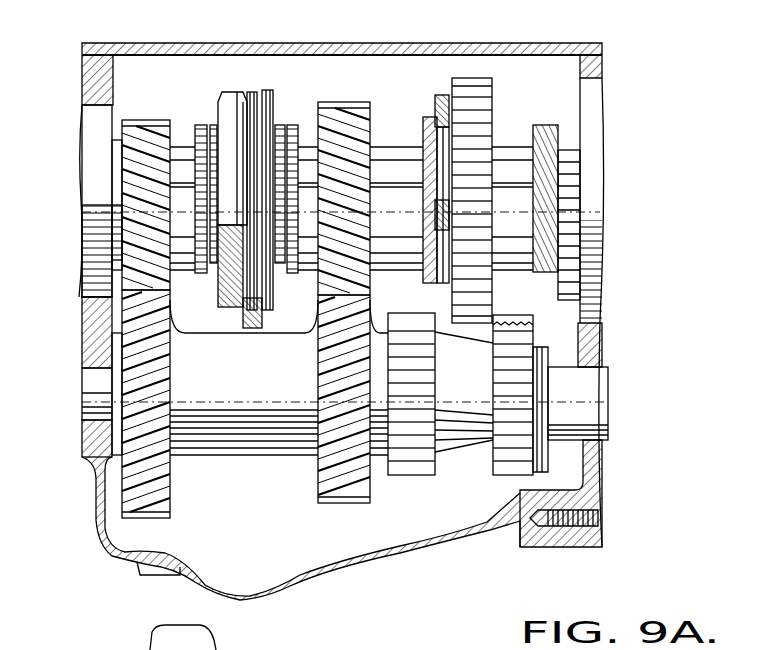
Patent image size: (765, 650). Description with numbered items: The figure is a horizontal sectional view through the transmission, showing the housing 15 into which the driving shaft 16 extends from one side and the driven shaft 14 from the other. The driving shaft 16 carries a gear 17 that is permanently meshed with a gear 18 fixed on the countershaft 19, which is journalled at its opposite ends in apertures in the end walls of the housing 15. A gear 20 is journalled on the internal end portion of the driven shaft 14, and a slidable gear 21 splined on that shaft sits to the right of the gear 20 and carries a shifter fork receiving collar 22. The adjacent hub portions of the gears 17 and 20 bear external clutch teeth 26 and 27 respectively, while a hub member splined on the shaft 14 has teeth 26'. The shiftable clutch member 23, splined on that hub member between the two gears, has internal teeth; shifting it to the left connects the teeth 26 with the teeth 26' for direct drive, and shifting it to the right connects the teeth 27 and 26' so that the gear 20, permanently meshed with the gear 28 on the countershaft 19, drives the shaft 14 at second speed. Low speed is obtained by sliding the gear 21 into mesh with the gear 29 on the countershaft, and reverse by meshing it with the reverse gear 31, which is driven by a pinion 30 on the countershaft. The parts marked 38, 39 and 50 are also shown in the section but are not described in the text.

The driven shaft 14 is at (563, 185).
The housing 15 is at (603, 60).
The driving shaft 16 is at (112, 200).
The gear 17 is at (148, 120).
The gear 18 is at (155, 500).
The countershaft 19 is at (278, 450).
The gear 20 is at (345, 102).
The slidable gear 21 is at (480, 102).
The shifter fork receiving collar 22 is at (425, 135).
The shiftable clutch member 23 is at (253, 92).
The external clutch teeth 26 is at (192, 179).
The teeth 26' is at (212, 209).
The external clutch teeth 27 is at (290, 127).
The gear 28 is at (350, 497).
The gear 29 is at (400, 470).
The pinion 30 is at (512, 470).
The reverse gear 31 is at (513, 317).
The key 38 is at (252, 328).
The nut 39 is at (443, 96).
The element 50 is at (150, 645).